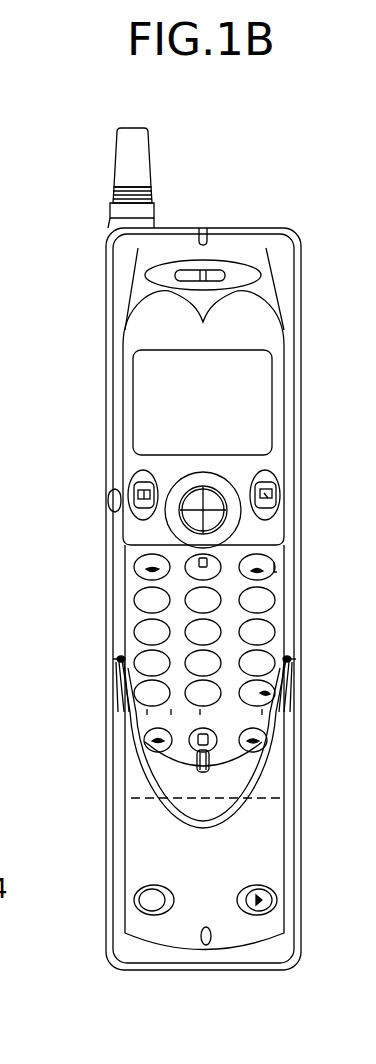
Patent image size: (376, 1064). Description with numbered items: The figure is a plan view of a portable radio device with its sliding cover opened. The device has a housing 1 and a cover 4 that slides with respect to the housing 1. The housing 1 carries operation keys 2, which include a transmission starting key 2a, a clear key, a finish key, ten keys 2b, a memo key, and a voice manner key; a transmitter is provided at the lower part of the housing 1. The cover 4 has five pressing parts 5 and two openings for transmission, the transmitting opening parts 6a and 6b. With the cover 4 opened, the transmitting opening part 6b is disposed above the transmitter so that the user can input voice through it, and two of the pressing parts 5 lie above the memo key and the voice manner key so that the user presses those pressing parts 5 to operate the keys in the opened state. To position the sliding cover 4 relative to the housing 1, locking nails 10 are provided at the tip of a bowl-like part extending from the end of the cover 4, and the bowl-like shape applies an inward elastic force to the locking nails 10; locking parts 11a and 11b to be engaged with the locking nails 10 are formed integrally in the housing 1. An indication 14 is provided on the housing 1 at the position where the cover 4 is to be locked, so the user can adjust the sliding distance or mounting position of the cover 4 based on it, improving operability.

The housing 1 is at (283, 268).
The operation keys 2 is at (142, 651).
The transmission starting key 2a is at (134, 566).
The ten keys 2b is at (162, 649).
The cover 4 is at (283, 843).
The pressing parts 5 is at (268, 742).
The transmitting opening part 6a is at (206, 946).
The transmitting opening part 6b is at (211, 764).
The locking nails 10 is at (286, 672).
The locking part 11a is at (117, 497).
The locking part 11b is at (297, 661).
The indication 14 is at (287, 656).